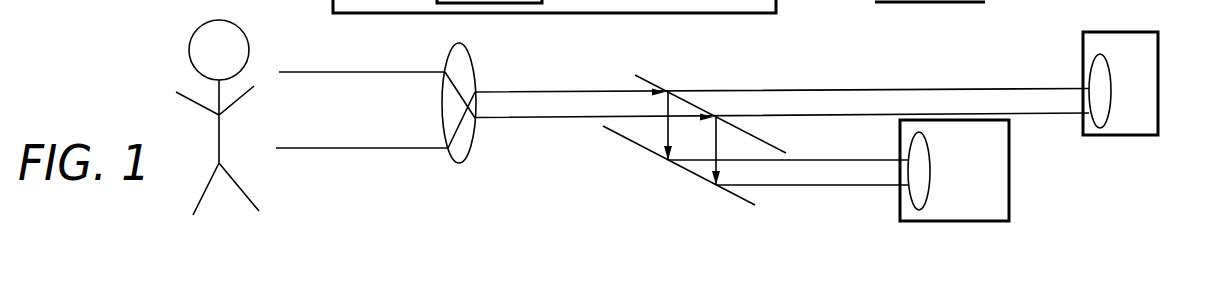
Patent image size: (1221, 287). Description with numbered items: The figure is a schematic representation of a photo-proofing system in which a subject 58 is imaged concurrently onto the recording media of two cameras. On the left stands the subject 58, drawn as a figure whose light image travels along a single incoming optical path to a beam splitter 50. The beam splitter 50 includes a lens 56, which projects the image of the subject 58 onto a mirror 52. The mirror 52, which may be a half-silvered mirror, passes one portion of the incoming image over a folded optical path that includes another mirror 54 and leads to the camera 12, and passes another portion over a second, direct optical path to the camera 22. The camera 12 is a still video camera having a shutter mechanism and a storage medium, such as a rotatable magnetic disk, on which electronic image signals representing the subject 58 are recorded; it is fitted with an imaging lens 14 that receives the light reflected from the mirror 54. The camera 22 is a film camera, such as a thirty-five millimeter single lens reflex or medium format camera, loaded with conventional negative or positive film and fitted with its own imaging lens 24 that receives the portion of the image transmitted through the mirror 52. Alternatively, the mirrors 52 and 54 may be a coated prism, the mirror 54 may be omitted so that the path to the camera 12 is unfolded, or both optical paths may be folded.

The camera 12 is at (1010, 195).
The imaging lens 14 is at (930, 167).
The camera 22 is at (1110, 32).
The imaging lens 24 is at (1111, 89).
The beam splitter 50 is at (787, 51).
The mirror 52 is at (645, 73).
The mirror 54 is at (633, 145).
The lens 56 is at (458, 163).
The subject 58 is at (170, 63).